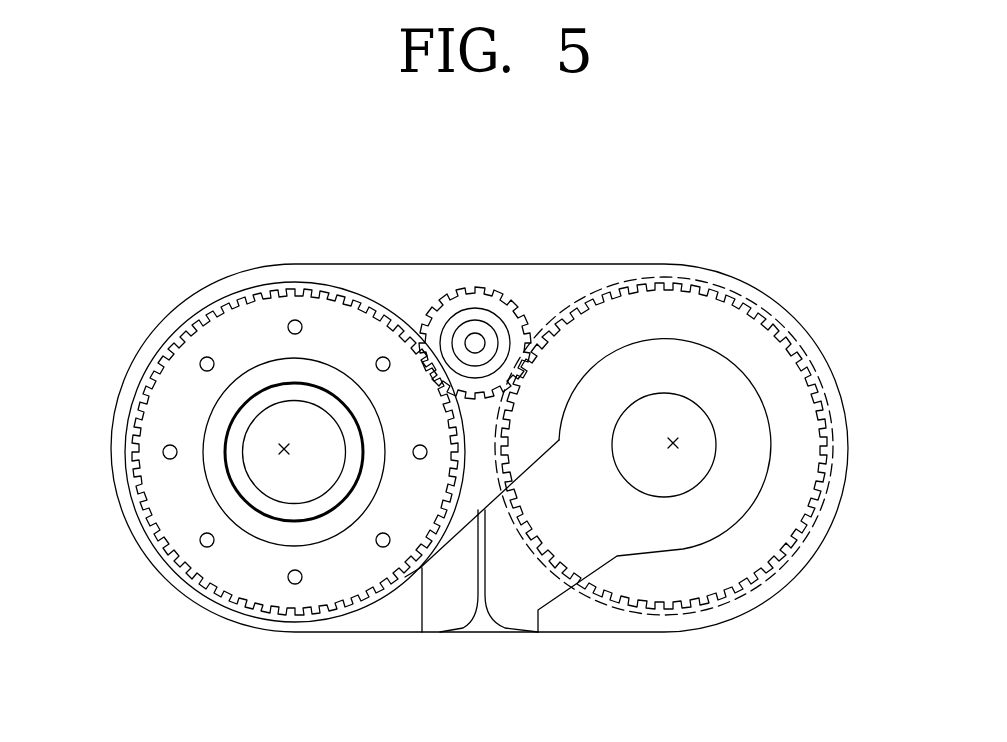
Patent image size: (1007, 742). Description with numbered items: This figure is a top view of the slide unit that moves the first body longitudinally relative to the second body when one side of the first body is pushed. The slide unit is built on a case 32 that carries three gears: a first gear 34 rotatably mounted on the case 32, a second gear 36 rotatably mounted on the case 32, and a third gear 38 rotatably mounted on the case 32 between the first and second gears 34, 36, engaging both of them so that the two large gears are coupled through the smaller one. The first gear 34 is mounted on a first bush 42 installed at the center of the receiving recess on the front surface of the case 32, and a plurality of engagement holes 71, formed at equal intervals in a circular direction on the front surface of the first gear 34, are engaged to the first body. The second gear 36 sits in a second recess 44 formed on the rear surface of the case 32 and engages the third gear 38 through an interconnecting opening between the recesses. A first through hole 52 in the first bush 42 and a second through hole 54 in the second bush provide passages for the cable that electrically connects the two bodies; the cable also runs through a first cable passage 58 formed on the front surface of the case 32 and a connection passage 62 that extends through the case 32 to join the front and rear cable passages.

The case 32 is at (627, 273).
The first gear 34 is at (263, 582).
The second gear 36 is at (720, 310).
The third gear 38 is at (487, 313).
The first bush 42 is at (272, 394).
The second recess 44 is at (780, 323).
The first through hole 52 is at (284, 449).
The second through hole 54 is at (673, 443).
The first cable passage 58 is at (577, 533).
The connection passage 62 is at (480, 597).
The engagement holes 71 is at (202, 546).